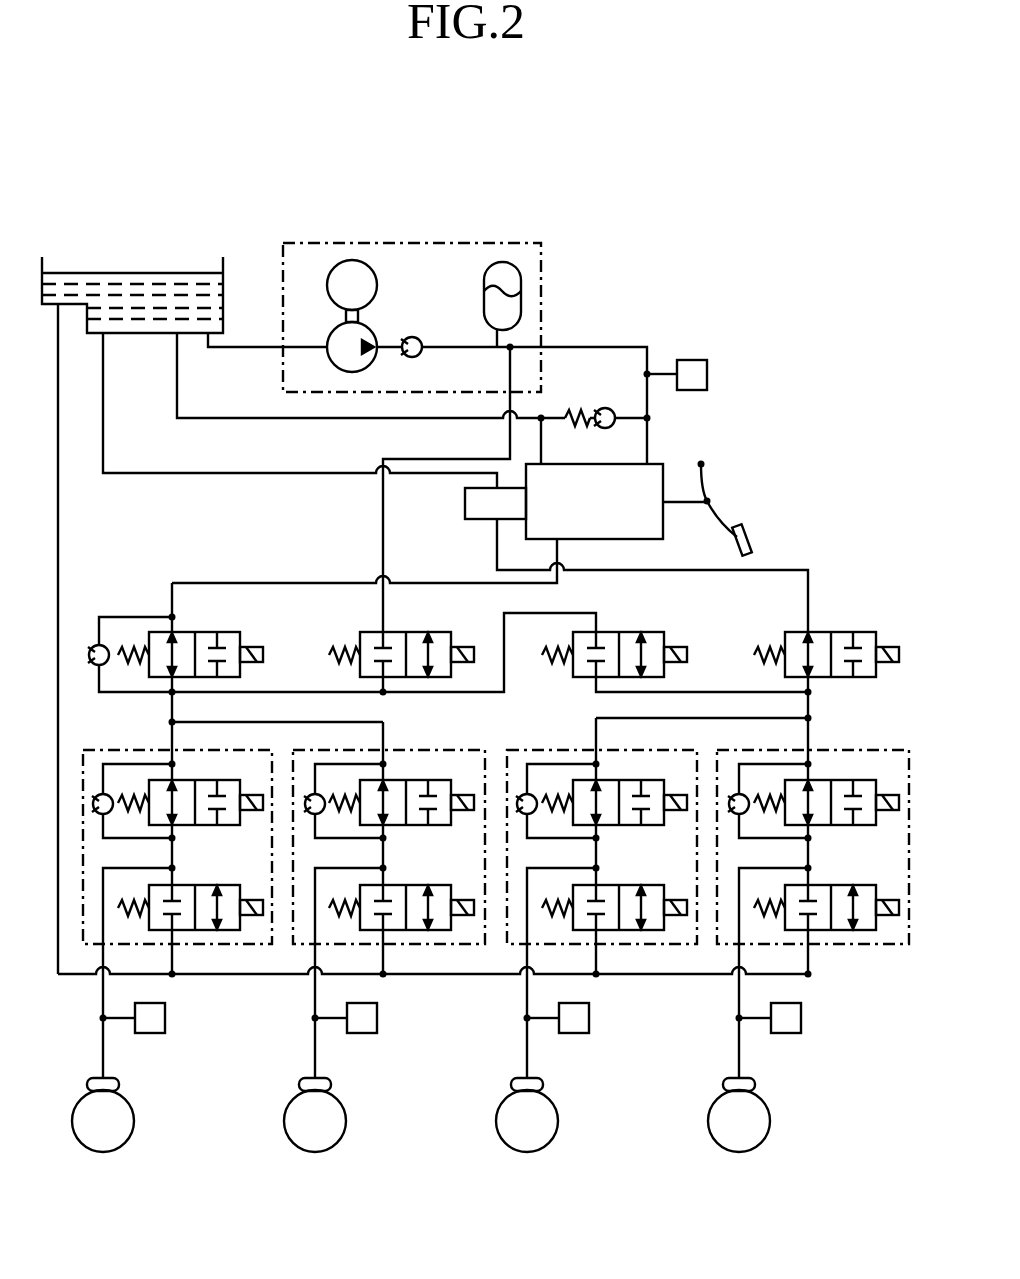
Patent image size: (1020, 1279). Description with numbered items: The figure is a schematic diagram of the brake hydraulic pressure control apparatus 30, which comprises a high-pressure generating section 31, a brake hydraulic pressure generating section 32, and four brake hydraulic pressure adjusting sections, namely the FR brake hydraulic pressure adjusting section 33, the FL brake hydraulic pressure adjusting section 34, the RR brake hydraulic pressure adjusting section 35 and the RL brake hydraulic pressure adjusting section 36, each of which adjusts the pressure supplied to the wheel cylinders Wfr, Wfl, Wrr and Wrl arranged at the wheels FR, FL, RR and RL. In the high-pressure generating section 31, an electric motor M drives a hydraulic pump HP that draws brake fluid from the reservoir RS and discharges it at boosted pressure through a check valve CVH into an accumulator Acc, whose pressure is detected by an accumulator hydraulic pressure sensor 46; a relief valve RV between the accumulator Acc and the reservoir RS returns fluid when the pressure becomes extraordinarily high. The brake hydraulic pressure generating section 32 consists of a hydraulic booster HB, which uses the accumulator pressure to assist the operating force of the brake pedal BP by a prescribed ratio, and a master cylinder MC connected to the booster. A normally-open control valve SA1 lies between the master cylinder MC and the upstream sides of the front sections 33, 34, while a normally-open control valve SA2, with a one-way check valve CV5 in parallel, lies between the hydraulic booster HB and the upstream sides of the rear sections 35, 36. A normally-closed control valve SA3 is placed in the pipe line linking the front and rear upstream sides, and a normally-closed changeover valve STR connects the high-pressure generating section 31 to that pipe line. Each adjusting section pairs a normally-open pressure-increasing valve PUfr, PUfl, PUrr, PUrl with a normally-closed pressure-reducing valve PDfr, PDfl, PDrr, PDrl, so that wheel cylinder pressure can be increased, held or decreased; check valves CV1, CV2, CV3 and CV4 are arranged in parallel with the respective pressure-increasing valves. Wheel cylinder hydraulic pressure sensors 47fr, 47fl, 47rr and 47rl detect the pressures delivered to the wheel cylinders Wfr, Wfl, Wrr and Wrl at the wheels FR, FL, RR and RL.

The reservoir RS is at (223, 291).
The high-pressure generating section 31 is at (545, 247).
The electric motor M is at (352, 291).
The hydraulic pump HP is at (368, 364).
The check valve CVH is at (412, 337).
The accumulator Acc is at (497, 262).
The brake hydraulic pressure control apparatus 30 is at (712, 272).
The accumulator hydraulic pressure sensor 46 is at (707, 374).
The relief valve RV is at (576, 412).
The brake hydraulic pressure generating section 32 is at (684, 450).
The hydraulic booster HB is at (594, 501).
The master cylinder MC is at (465, 502).
The brake pedal BP is at (748, 540).
The check valve CV5 is at (97, 644).
The control valve SA2 is at (190, 632).
The changeover valve STR is at (402, 631).
The control valve SA3 is at (614, 631).
The control valve SA1 is at (800, 631).
The RL brake hydraulic pressure adjusting section 36 is at (83, 752).
The RR brake hydraulic pressure adjusting section 35 is at (294, 752).
The FL brake hydraulic pressure adjusting section 34 is at (507, 752).
The FR brake hydraulic pressure adjusting section 33 is at (717, 752).
The pressure-increasing valve PUrl is at (190, 781).
The pressure-increasing valve PUrr is at (401, 781).
The pressure-increasing valve PUfl is at (614, 781).
The pressure-increasing valve PUfr is at (826, 781).
The pressure-reducing valve PDrl is at (190, 885).
The pressure-reducing valve PDrr is at (401, 885).
The pressure-reducing valve PDfl is at (614, 885).
The pressure-reducing valve PDfr is at (826, 885).
The check valve CV4 is at (97, 816).
The check valve CV3 is at (309, 816).
The check valve CV2 is at (521, 816).
The check valve CV1 is at (733, 816).
The wheel cylinder hydraulic pressure sensor 47rl is at (165, 1018).
The wheel cylinder hydraulic pressure sensor 47rr is at (377, 1018).
The wheel cylinder hydraulic pressure sensor 47fl is at (589, 1018).
The wheel cylinder hydraulic pressure sensor 47fr is at (801, 1018).
The wheel cylinder Wrl is at (118, 1082).
The wheel cylinder Wrr is at (330, 1082).
The wheel cylinder Wfl is at (542, 1082).
The wheel cylinder Wfr is at (754, 1082).
The rear left wheel RL is at (103, 1121).
The rear right wheel RR is at (315, 1121).
The front left wheel FL is at (527, 1121).
The front right wheel FR is at (739, 1121).